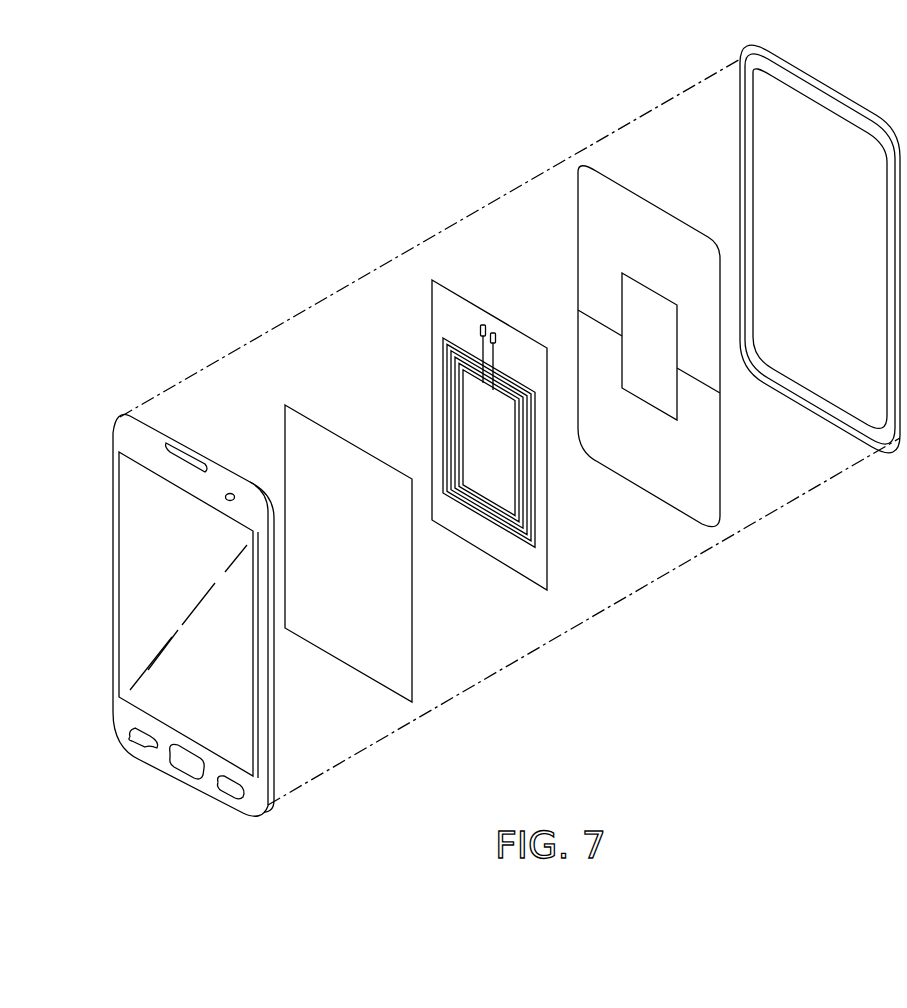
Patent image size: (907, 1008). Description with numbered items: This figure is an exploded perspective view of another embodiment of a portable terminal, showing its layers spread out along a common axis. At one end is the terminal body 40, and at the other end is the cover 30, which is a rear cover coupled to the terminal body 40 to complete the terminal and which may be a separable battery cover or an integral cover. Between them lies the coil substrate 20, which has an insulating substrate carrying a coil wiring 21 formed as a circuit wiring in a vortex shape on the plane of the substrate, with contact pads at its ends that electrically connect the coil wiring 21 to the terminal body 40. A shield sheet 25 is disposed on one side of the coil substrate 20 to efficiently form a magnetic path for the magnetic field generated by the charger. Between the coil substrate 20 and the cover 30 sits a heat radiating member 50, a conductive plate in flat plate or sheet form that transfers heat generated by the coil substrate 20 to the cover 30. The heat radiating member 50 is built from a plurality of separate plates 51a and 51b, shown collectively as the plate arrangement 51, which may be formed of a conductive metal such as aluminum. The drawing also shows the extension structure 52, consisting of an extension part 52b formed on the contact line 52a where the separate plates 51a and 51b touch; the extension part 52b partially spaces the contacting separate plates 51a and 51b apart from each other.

The coil substrate 20 is at (440, 307).
The coil wiring 21 is at (537, 497).
The shield sheet 25 is at (303, 452).
The cover 30 is at (767, 118).
The terminal body 40 is at (130, 442).
The heat radiating member 50 is at (648, 317).
The first shielding sheet 51 is at (652, 317).
The separate plate 51a is at (640, 217).
The separate plate 51b is at (693, 442).
The second shielding sheet 52 is at (568, 325).
The contact line 52a is at (603, 317).
The extension part 52b is at (652, 320).